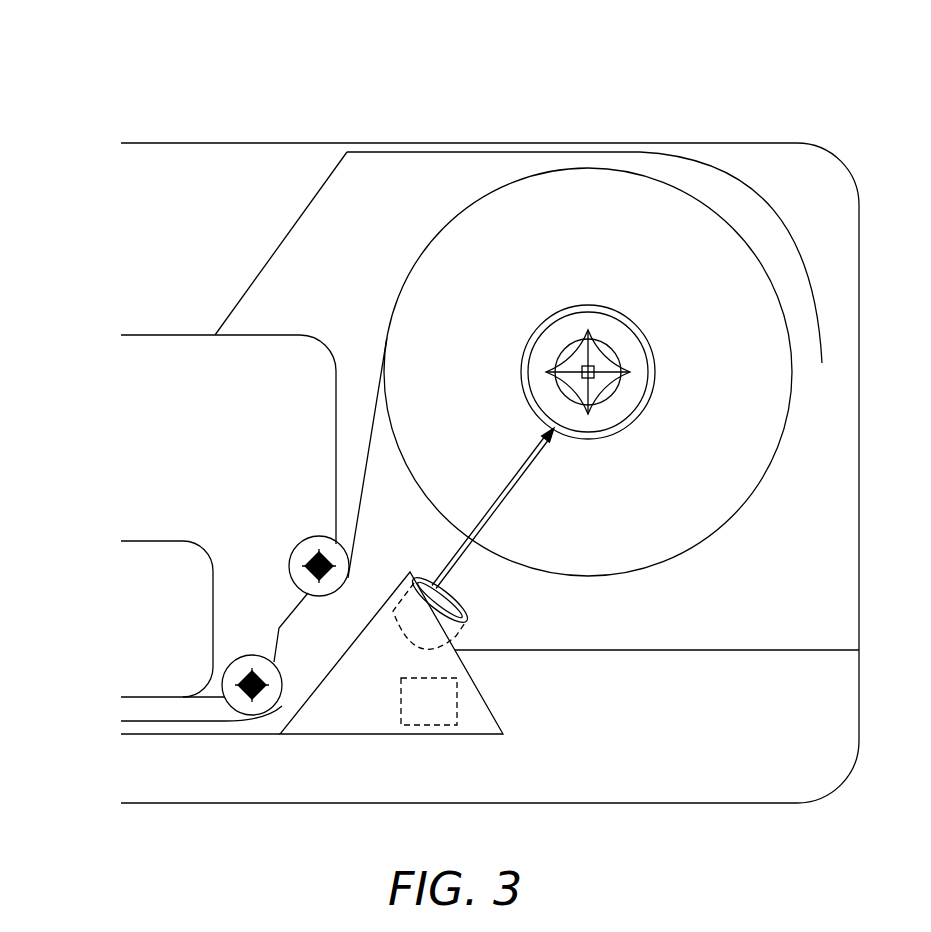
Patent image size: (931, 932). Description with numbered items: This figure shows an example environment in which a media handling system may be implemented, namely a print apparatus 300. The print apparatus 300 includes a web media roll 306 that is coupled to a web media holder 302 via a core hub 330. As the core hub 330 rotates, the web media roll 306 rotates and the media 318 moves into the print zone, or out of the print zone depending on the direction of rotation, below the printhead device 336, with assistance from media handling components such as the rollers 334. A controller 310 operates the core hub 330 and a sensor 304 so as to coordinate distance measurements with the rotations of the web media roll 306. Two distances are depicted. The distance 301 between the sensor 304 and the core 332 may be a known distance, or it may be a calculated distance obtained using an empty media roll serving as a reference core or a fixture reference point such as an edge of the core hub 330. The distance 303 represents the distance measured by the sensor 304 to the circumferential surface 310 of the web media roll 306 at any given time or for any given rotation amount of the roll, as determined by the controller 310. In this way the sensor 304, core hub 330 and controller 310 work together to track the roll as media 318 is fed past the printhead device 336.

The print apparatus 300 is at (160, 86).
The distance 301 is at (458, 553).
The web media holder 302 is at (738, 551).
The distance 303 is at (458, 588).
The sensor 304 is at (392, 606).
The web media roll 306 is at (588, 372).
The controller 310 is at (590, 577).
The media 318 is at (165, 724).
The core hub 330 is at (616, 297).
The core 332 is at (626, 437).
The rollers 334 is at (290, 547).
The printhead device 336 is at (150, 541).